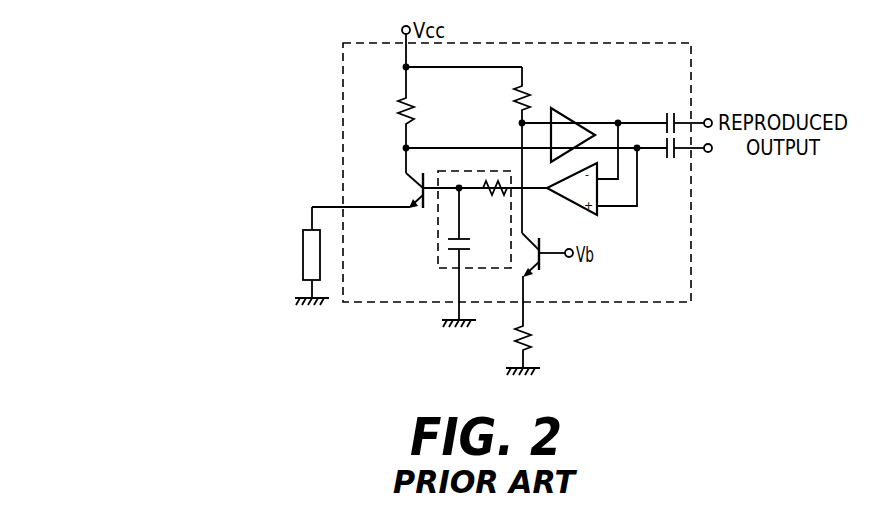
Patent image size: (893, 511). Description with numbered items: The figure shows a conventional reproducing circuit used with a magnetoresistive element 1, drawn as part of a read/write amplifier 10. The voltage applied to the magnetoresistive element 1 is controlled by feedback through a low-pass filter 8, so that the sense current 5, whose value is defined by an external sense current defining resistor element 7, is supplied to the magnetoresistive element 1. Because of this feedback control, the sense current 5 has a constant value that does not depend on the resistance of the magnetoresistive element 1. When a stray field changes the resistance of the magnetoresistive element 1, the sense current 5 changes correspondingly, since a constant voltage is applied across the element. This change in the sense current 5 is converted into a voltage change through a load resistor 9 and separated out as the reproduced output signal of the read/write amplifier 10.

The magnetoresistive element 1 is at (302, 243).
The sense current 5 is at (305, 216).
The sense current defining resistor element 7 is at (530, 335).
The low-pass filter 8 is at (438, 247).
The load resistor 9 is at (400, 110).
The read/write amplifier 10 is at (691, 87).